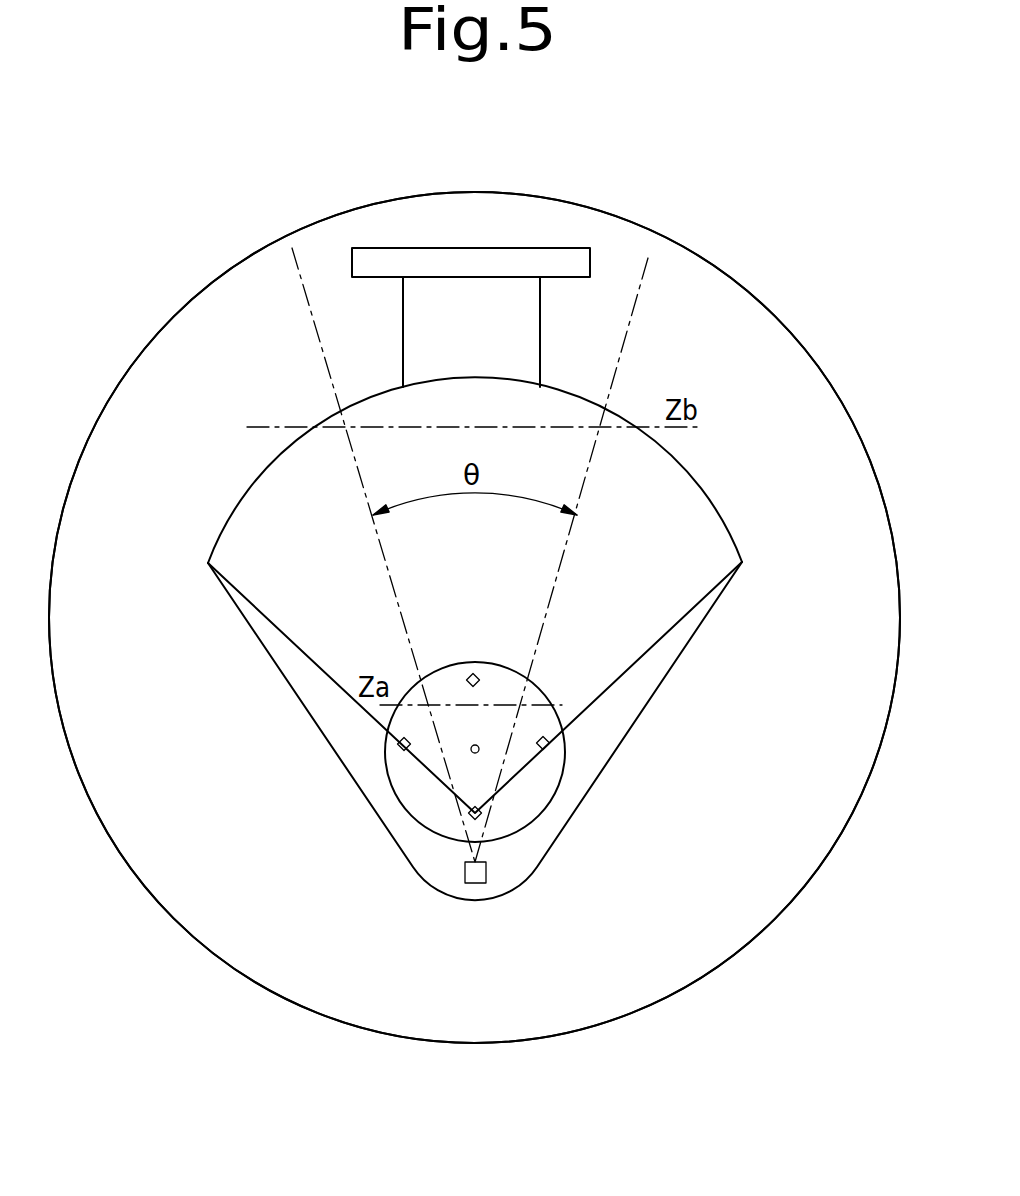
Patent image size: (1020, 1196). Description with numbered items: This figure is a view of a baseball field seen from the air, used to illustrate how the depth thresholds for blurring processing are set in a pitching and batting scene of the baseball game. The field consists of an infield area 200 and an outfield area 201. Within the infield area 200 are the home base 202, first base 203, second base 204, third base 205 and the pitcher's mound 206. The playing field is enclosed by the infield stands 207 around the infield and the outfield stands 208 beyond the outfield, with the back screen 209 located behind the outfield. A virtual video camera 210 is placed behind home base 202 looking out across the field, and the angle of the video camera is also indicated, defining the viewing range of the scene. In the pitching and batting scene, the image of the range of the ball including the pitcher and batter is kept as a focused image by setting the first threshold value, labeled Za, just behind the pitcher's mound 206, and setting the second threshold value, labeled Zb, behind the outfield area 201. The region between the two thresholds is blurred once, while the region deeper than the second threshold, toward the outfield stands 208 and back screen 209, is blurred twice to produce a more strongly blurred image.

The infield area 200 is at (542, 733).
The outfield area 201 is at (678, 583).
The home base 202 is at (480, 813).
The first base 203 is at (550, 753).
The second base 204 is at (472, 672).
The third base 205 is at (403, 742).
The pitcher's mound 206 is at (477, 743).
The infield stands 207 is at (533, 1000).
The outfield stands 208 is at (675, 300).
The back screen 209 is at (555, 252).
The virtual video camera 210 is at (480, 868).